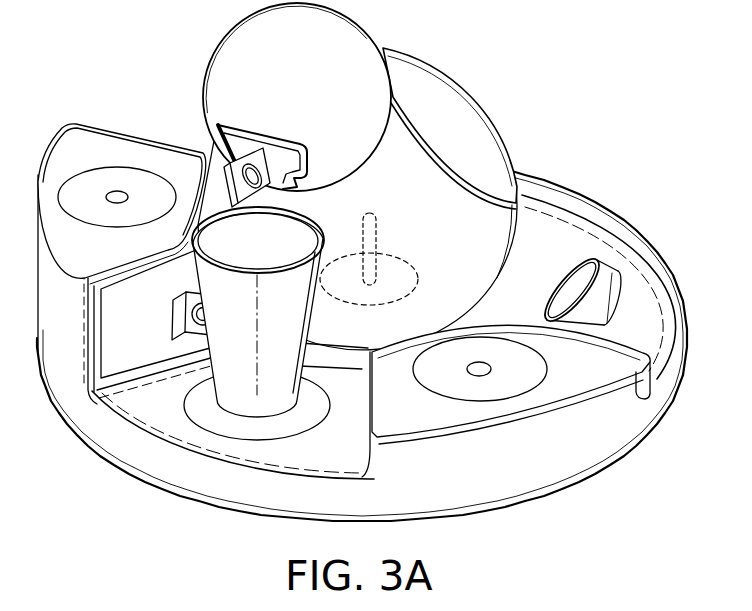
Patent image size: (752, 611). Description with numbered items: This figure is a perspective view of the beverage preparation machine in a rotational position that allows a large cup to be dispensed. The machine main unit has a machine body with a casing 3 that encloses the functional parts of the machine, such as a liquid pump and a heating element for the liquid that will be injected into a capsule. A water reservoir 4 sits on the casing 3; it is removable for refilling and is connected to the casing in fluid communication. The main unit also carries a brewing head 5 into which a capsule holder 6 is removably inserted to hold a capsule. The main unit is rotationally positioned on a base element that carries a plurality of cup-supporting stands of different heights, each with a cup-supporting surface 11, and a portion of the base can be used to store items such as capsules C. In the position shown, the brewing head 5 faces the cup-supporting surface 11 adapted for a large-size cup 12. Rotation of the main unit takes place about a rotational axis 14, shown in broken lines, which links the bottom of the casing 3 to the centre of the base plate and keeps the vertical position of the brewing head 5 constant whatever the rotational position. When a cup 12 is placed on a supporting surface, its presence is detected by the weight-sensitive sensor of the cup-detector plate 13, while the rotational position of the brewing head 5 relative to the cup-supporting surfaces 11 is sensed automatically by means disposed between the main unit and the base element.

The casing 3 is at (443, 257).
The water reservoir 4 is at (458, 141).
The brewing head 5 is at (333, 79).
The capsule holder 6 is at (228, 139).
The cup-supporting surface 11 is at (95, 146).
The cup 12 is at (281, 321).
The cup-detector plate 13 is at (163, 209).
The rotational axis 14 is at (381, 232).
The capsules C is at (568, 286).